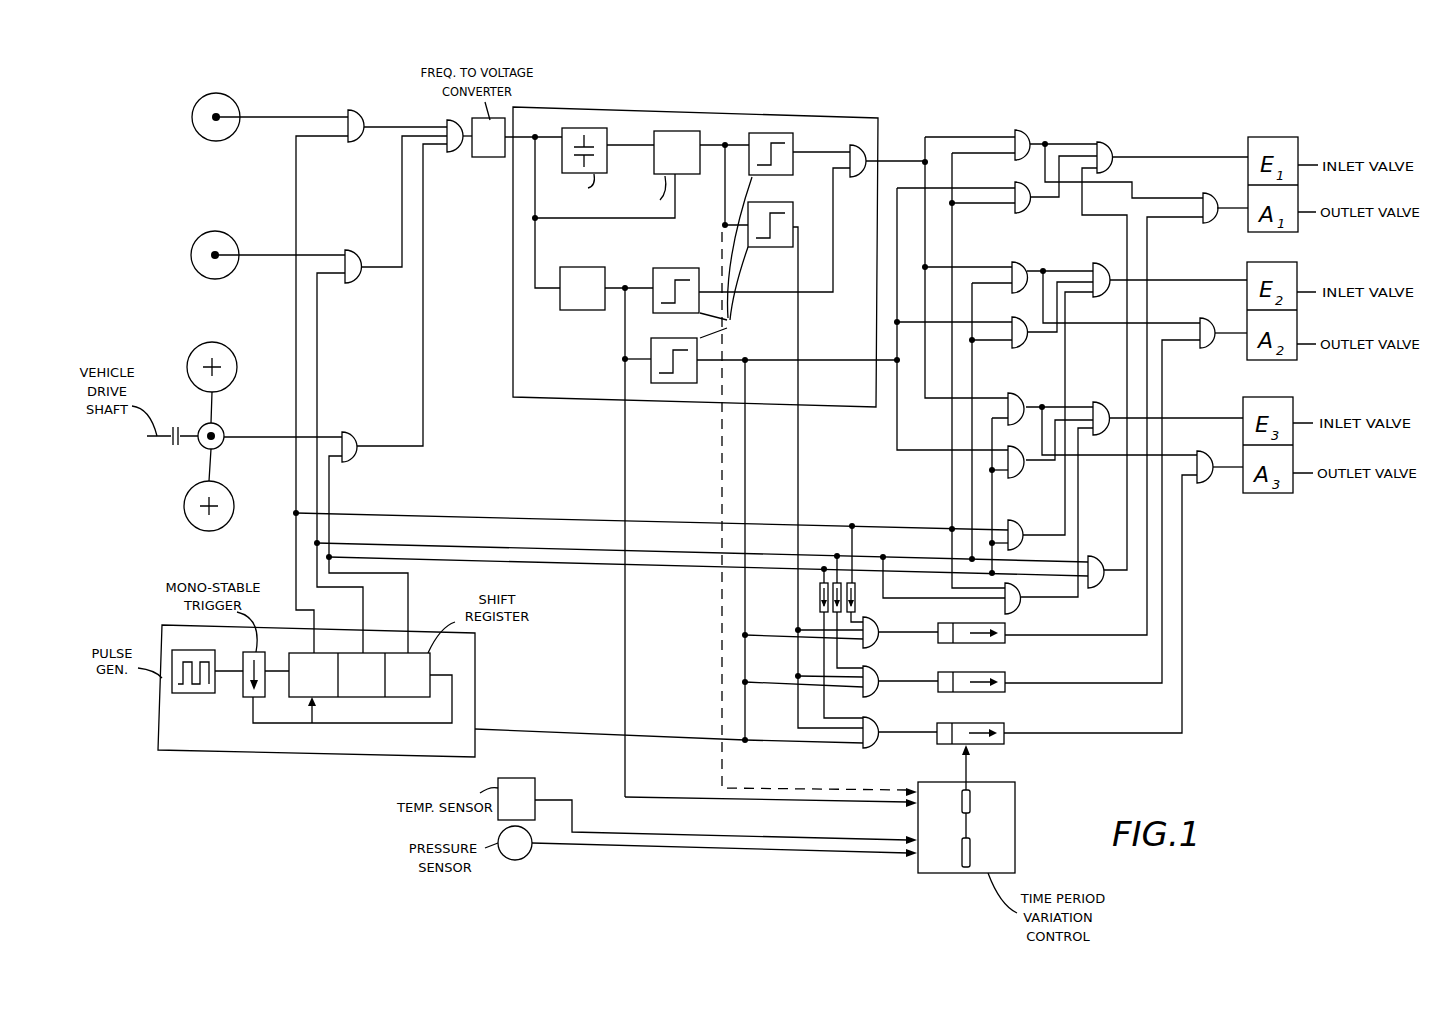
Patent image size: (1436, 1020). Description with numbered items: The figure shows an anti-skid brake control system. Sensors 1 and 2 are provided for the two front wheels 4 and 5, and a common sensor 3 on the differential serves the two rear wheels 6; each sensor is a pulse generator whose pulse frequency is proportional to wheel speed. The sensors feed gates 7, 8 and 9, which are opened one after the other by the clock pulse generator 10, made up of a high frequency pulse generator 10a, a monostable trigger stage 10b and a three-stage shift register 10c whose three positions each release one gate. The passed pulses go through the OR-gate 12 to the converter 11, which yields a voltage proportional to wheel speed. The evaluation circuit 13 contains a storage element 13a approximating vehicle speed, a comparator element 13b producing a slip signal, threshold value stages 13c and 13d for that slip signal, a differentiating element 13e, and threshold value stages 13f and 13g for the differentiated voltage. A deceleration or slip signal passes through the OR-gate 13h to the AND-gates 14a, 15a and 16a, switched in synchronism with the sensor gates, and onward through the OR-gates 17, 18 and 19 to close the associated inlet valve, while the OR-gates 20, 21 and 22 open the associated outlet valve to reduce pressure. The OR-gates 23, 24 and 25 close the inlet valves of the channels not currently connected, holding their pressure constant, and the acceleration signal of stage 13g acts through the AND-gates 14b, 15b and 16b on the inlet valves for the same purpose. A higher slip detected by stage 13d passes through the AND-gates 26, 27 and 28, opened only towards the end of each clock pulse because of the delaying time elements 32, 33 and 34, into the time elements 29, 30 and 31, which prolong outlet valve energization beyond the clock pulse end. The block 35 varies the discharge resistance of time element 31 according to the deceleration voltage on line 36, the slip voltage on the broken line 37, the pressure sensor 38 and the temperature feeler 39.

The sensor 1 is at (200, 134).
The sensor 2 is at (200, 270).
The common sensor 3 is at (205, 445).
The front wheel 4 is at (232, 109).
The front wheel 5 is at (219, 240).
The rear wheels 6 is at (215, 497).
The gate 7 is at (367, 122).
The gate 8 is at (352, 260).
The gate 9 is at (350, 430).
The clock pulse generator 10 is at (430, 754).
The high frequency pulse generator 10a is at (192, 690).
The monostable trigger stage 10b is at (248, 697).
The three-stage shift register 10c is at (358, 687).
The converter 11 is at (497, 148).
The OR-gate 12 is at (449, 154).
The evaluation circuit 13 is at (535, 390).
The storage element 13a is at (600, 153).
The comparator element 13b is at (692, 149).
The threshold value stage 13c is at (782, 156).
The threshold value stage 13d is at (778, 240).
The differentiating element 13e is at (588, 304).
The threshold value stage 13f is at (662, 281).
The threshold value stage 13g is at (680, 374).
The OR-gate 13h is at (862, 159).
The AND-gate 14a is at (1036, 142).
The AND-gate 14b is at (1013, 215).
The AND-gate 15a is at (1026, 272).
The AND-gate 15b is at (1013, 346).
The AND-gate 16a is at (1020, 407).
The AND-gate 16b is at (1019, 470).
The OR-gate 17 is at (1113, 148).
The OR-gate 18 is at (1102, 263).
The OR-gate 19 is at (1096, 401).
The OR-gate 20 is at (1206, 225).
The OR-gate 21 is at (1208, 349).
The OR-gate 22 is at (1205, 485).
The OR-gate 23 is at (1097, 585).
The OR-gate 24 is at (1024, 528).
The OR-gate 25 is at (1018, 608).
The AND-gate 26 is at (878, 642).
The AND-gate 27 is at (877, 692).
The AND-gate 28 is at (873, 746).
The time element 29 is at (1010, 643).
The time element 30 is at (1002, 693).
The time element 31 is at (998, 745).
The time element 32 is at (856, 602).
The time element 33 is at (840, 582).
The time element 34 is at (818, 596).
The block 35 is at (1007, 842).
The line 36 is at (679, 798).
The line 37 is at (718, 621).
The pressure sensor 38 is at (520, 851).
The temperature feeler 39 is at (526, 795).